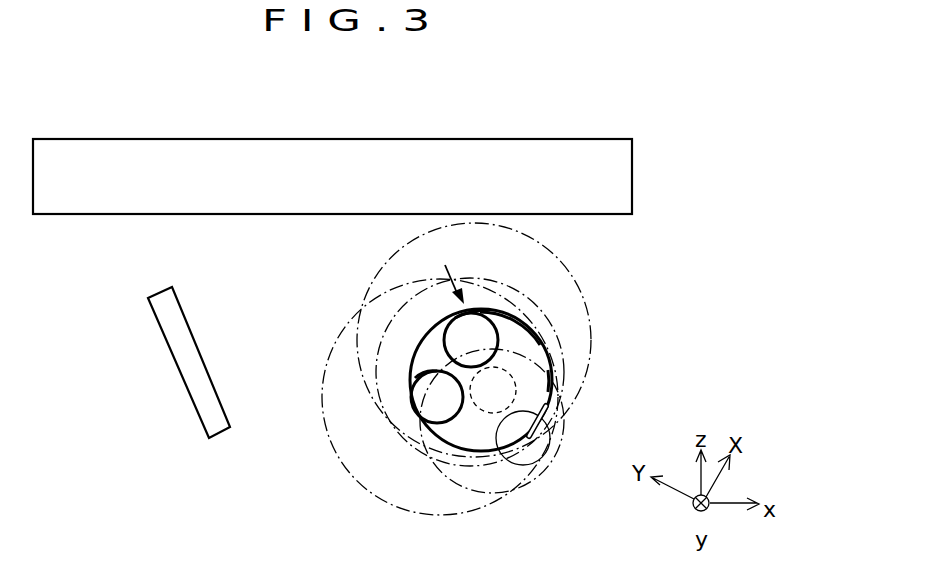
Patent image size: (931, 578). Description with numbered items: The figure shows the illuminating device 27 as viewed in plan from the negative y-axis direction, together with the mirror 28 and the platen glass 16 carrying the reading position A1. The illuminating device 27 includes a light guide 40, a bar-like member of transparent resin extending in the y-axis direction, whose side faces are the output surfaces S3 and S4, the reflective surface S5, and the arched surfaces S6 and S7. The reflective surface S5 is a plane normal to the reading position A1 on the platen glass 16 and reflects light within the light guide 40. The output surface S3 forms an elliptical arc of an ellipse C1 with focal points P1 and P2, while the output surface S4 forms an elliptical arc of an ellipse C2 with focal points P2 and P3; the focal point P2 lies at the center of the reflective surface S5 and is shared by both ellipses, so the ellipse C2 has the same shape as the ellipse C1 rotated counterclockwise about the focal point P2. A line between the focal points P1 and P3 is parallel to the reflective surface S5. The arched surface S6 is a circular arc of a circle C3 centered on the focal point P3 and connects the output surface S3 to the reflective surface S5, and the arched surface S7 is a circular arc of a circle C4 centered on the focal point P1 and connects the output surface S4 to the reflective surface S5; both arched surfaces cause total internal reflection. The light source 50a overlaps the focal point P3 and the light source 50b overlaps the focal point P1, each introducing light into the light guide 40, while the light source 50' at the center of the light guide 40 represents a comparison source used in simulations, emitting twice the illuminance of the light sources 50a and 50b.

The platen glass 16 is at (475, 138).
The reading position A1 is at (321, 138).
The mirror 28 is at (179, 371).
The illuminating device 27 is at (448, 272).
The light guide 40 is at (533, 335).
The light source 50' is at (437, 340).
The light source 50a is at (422, 420).
The light source 50b is at (495, 326).
The focal point P1 is at (471, 340).
The focal point P2 is at (495, 430).
The focal point P3 is at (438, 395).
The output surface S3 is at (473, 309).
The output surface S4 is at (428, 378).
The reflective surface S5 is at (552, 417).
The arched surface S6 is at (551, 377).
The arched surface S7 is at (538, 461).
The ellipse C1 is at (564, 361).
The ellipse C2 is at (507, 466).
The circle C3 is at (333, 447).
The circle C4 is at (568, 279).